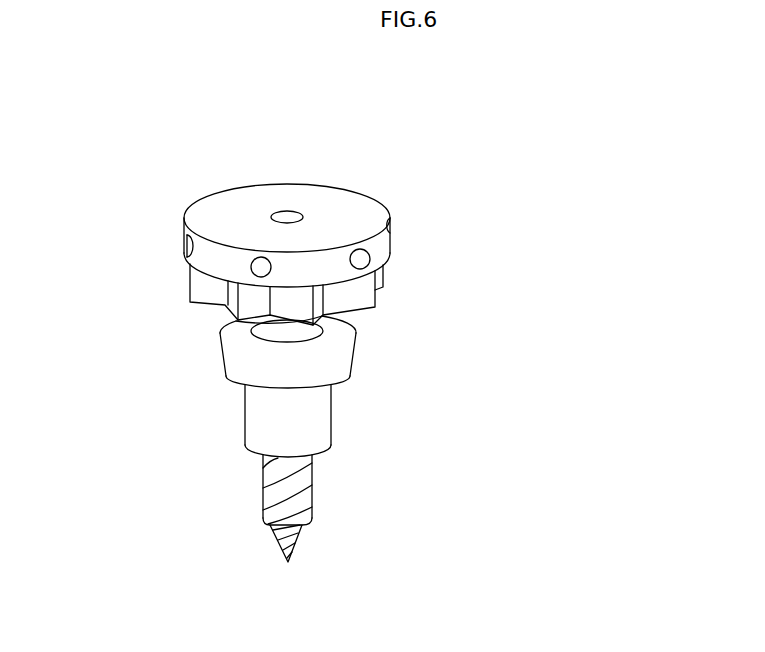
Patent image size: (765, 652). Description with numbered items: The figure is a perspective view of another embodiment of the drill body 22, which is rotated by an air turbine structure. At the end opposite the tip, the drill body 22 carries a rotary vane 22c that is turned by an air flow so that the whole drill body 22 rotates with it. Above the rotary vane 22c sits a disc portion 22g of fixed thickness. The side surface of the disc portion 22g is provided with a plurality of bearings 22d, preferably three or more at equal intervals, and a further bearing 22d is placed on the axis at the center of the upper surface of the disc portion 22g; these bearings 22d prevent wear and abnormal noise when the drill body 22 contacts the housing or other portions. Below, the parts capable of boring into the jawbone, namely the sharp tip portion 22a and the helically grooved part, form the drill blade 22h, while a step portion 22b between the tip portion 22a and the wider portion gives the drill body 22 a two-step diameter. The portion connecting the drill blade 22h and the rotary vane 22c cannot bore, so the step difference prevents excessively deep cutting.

The drill body 22 is at (143, 139).
The tip portion 22a is at (288, 562).
The step portion 22b is at (265, 523).
The rotary vane 22c is at (352, 300).
The bearing 22d is at (289, 217).
The disc portion 22g is at (353, 208).
The drill blade 22h is at (300, 538).